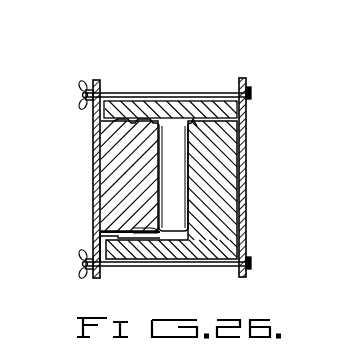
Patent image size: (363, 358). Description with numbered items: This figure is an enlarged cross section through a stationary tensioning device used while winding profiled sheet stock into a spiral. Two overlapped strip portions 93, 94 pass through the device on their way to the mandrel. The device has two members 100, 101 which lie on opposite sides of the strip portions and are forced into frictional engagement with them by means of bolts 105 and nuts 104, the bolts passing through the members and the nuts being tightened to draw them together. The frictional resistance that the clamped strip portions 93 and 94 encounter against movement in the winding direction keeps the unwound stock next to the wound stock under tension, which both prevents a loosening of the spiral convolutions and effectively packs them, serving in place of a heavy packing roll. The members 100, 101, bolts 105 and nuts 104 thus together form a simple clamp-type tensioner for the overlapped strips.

The strip portion 93 is at (134, 121).
The strip portion 94 is at (182, 124).
The member 100 is at (246, 131).
The member 101 is at (106, 167).
The nut 104 is at (86, 83).
The bolt 105 is at (176, 268).